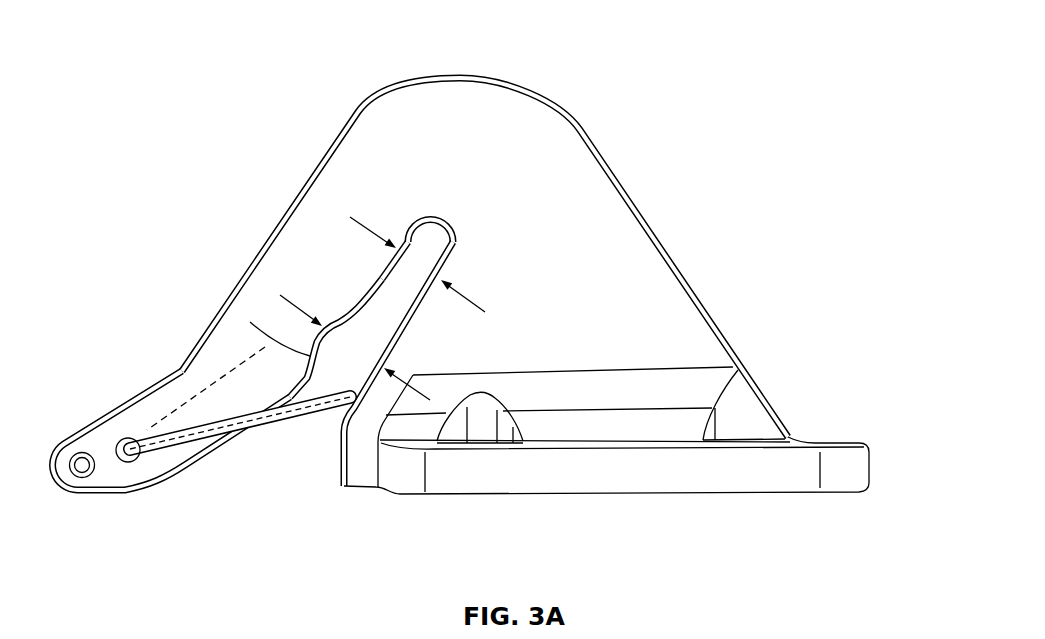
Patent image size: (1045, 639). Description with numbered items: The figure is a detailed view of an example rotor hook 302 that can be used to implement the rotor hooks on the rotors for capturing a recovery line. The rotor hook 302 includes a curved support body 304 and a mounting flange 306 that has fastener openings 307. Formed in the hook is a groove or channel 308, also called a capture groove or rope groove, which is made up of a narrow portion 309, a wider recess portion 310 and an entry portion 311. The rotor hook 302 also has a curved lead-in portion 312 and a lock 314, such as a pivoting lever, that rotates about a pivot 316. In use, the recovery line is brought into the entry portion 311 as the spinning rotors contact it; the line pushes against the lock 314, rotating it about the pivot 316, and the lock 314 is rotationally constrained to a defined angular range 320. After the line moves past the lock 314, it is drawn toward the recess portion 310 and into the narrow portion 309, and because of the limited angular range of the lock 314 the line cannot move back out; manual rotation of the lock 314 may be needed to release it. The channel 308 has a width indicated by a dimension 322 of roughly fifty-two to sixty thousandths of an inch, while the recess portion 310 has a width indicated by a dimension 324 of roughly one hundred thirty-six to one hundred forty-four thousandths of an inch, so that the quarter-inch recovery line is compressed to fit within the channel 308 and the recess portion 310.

The rotor hook 302 is at (461, 287).
The curved support body 304 is at (615, 213).
The mounting flange 306 is at (645, 482).
The fastener openings 307 is at (482, 442).
The groove 308 is at (432, 209).
The narrow portion 309 is at (457, 240).
The recess portion 310 is at (250, 322).
The entry portion 311 is at (333, 480).
The curved lead-in portion 312 is at (140, 473).
The lock 314 is at (230, 427).
The pivot 316 is at (107, 447).
The angular range 320 is at (177, 413).
The dimension 322 is at (363, 226).
The dimension 324 is at (304, 310).